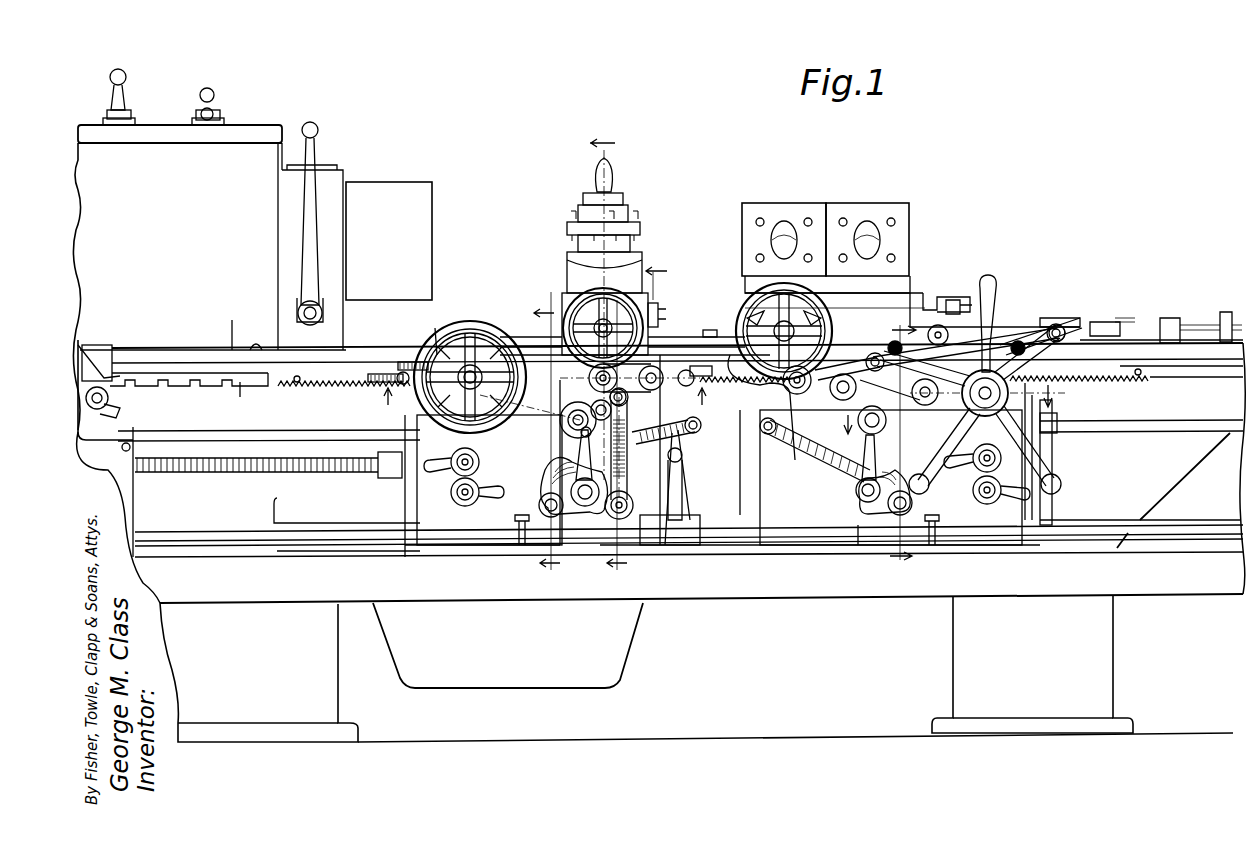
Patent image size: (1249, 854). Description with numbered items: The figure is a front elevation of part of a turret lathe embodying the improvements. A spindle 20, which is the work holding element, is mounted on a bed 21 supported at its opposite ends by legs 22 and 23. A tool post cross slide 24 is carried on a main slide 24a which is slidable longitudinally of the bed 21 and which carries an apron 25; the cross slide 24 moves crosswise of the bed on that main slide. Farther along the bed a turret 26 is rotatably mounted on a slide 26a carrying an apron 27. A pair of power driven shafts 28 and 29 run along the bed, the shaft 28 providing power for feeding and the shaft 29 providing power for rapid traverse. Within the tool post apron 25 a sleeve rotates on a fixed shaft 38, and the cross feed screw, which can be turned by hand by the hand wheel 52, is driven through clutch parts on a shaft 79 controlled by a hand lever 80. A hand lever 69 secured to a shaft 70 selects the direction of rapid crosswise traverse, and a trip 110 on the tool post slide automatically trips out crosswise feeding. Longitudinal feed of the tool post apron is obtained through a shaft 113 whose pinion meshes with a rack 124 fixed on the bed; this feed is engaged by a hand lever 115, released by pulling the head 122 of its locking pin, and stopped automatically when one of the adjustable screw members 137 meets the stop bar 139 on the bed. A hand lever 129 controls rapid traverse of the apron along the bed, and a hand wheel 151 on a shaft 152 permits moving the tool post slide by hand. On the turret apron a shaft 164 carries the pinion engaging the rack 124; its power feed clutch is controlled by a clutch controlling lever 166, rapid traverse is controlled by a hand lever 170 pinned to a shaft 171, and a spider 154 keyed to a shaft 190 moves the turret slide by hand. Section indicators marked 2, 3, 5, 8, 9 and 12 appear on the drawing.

The section line 2 is at (602, 286).
The section line 3 is at (547, 439).
The section line 5 is at (637, 420).
The section line 8 is at (545, 403).
The section line 9 is at (903, 445).
The section line 12 is at (947, 409).
The spindle 20 is at (375, 196).
The bed 21 is at (318, 396).
The leg 22 is at (332, 675).
The leg 23 is at (1106, 647).
The tool post cross slide 24 is at (632, 243).
The main slide 24a is at (673, 355).
The apron 25 is at (538, 360).
The turret 26 is at (907, 232).
The slide 26a is at (968, 330).
The apron 27 is at (940, 355).
The power driven shaft 28 is at (190, 440).
The power driven shaft 29 is at (218, 530).
The fixed shaft 38 is at (560, 428).
The hand wheel 52 is at (566, 298).
The hand lever 69 is at (628, 453).
The shaft 70 is at (635, 449).
The shaft 79 is at (586, 376).
The hand lever 80 is at (672, 343).
The trip 110 is at (655, 305).
The shaft 113 is at (525, 400).
The hand lever 115 is at (404, 360).
The head 122 is at (436, 328).
The rack 124 is at (722, 366).
The hand lever 129 is at (566, 472).
The adjustable screw member 137 is at (378, 372).
The stop bar 139 is at (243, 399).
The hand wheel 151 is at (446, 340).
The shaft 152 is at (460, 345).
The spider 154 is at (992, 318).
The shaft 164 is at (899, 403).
The clutch controlling lever 166 is at (1005, 342).
The hand lever 170 is at (842, 456).
The shaft 171 is at (890, 516).
The shaft 190 is at (972, 409).